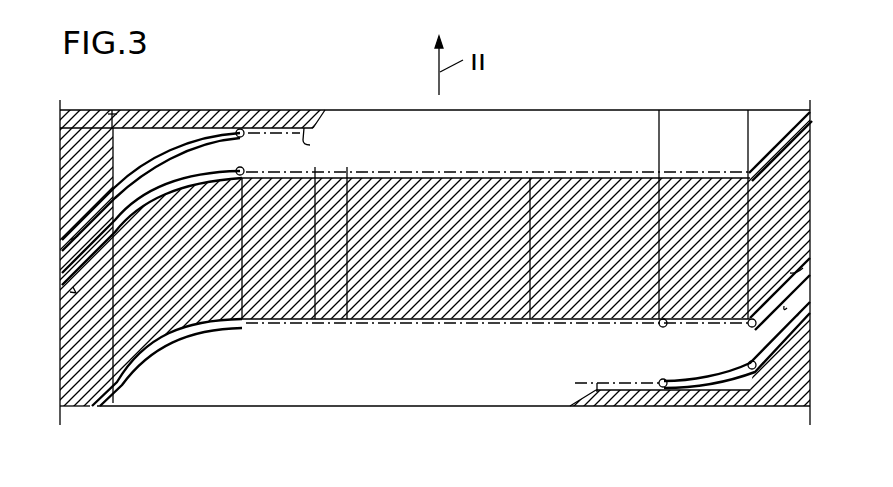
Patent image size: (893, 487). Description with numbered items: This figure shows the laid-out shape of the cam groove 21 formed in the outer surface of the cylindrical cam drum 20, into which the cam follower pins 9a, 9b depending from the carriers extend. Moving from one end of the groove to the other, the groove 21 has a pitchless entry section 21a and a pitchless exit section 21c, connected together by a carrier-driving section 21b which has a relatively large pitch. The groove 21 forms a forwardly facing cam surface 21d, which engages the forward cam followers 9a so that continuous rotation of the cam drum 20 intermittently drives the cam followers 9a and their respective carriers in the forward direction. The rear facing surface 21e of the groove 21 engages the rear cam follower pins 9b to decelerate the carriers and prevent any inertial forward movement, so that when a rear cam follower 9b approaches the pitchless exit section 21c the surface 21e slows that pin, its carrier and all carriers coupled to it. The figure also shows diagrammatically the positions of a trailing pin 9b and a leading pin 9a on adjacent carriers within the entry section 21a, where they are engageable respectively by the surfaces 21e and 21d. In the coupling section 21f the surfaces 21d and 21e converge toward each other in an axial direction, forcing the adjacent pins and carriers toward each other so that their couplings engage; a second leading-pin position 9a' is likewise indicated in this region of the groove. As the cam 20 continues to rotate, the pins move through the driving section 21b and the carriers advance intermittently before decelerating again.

The cylindrical drum 20 is at (578, 96).
The groove 21 is at (453, 360).
The pitchless entry section 21a is at (598, 404).
The carrier-driving section 21b is at (70, 292).
The pitchless exit section 21c is at (282, 148).
The forwardly facing cam surface 21d is at (62, 285).
The rear facing surface 21e is at (310, 145).
The coupling section 21f is at (707, 370).
The cam follower pin 9a is at (437, 198).
The channel 9a' is at (692, 345).
The cam follower pin 9b is at (237, 135).